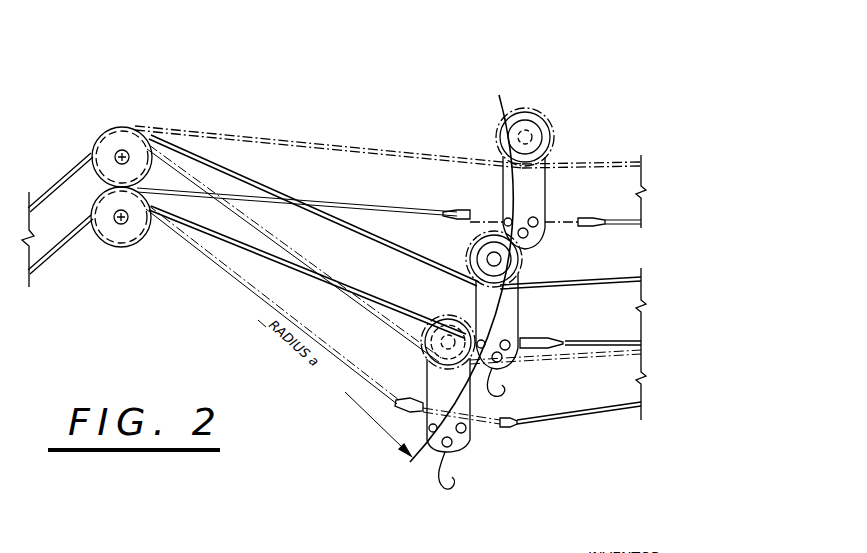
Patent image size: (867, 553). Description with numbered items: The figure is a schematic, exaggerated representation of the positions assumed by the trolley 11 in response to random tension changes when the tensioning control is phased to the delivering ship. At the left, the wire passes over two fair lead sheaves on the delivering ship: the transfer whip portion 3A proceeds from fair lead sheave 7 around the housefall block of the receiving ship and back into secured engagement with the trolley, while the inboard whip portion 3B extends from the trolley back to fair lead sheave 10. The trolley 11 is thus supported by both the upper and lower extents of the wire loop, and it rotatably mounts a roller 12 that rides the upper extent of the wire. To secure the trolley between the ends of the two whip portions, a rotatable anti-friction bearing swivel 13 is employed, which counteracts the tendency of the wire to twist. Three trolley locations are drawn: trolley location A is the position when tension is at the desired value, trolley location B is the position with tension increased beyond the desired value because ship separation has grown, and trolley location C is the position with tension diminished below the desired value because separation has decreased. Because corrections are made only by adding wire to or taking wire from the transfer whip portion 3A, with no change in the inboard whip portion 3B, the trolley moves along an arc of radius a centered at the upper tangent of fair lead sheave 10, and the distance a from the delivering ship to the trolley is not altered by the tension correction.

The fair lead sheave 7 is at (126, 128).
The fair lead sheave 10 is at (117, 246).
The transfer whip portion 3A is at (289, 182).
The inboard whip portion 3B is at (404, 279).
The trolley 11 is at (481, 334).
The roller 12 is at (472, 248).
The rotatable anti-friction bearing swivel 13 is at (557, 318).
The trolley location A is at (514, 334).
The trolley location B is at (540, 199).
The trolley location C is at (452, 394).